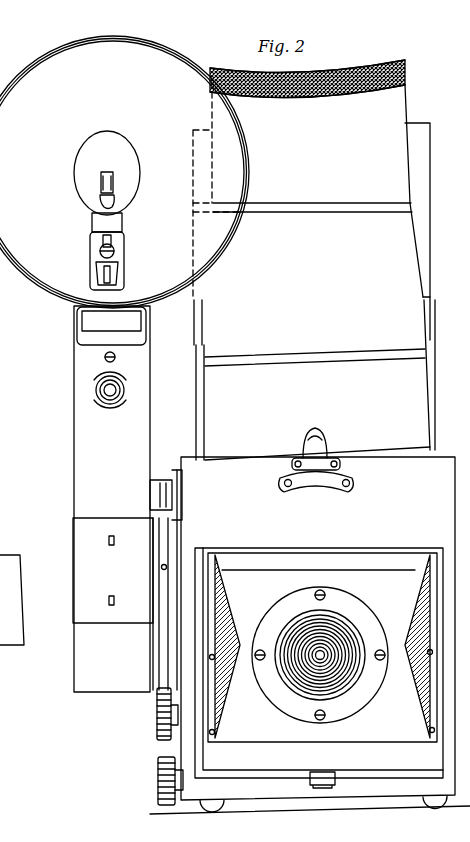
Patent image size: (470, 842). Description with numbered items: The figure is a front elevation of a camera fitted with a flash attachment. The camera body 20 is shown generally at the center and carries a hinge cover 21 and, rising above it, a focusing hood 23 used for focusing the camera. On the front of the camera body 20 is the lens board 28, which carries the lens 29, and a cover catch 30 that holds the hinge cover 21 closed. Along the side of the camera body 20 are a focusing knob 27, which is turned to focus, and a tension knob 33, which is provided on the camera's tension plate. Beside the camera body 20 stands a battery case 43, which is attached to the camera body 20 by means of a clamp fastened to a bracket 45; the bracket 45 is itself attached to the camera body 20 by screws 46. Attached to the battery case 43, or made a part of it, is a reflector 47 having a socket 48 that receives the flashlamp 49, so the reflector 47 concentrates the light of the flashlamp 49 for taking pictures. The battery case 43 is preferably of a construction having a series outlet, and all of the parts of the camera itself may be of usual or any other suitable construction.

The camera body 20 is at (440, 462).
The hinge cover 21 is at (426, 218).
The focusing hood 23 is at (404, 110).
The focusing knob 27 is at (158, 783).
The lens board 28 is at (368, 728).
The lens 29 is at (305, 675).
The cover catch 30 is at (323, 478).
The tension knob 33 is at (156, 718).
The battery case 43 is at (78, 445).
The bracket 45 is at (175, 630).
The screws 46 is at (178, 470).
The reflector 47 is at (78, 538).
The socket 48 is at (90, 243).
The flashlamp 49 is at (135, 173).